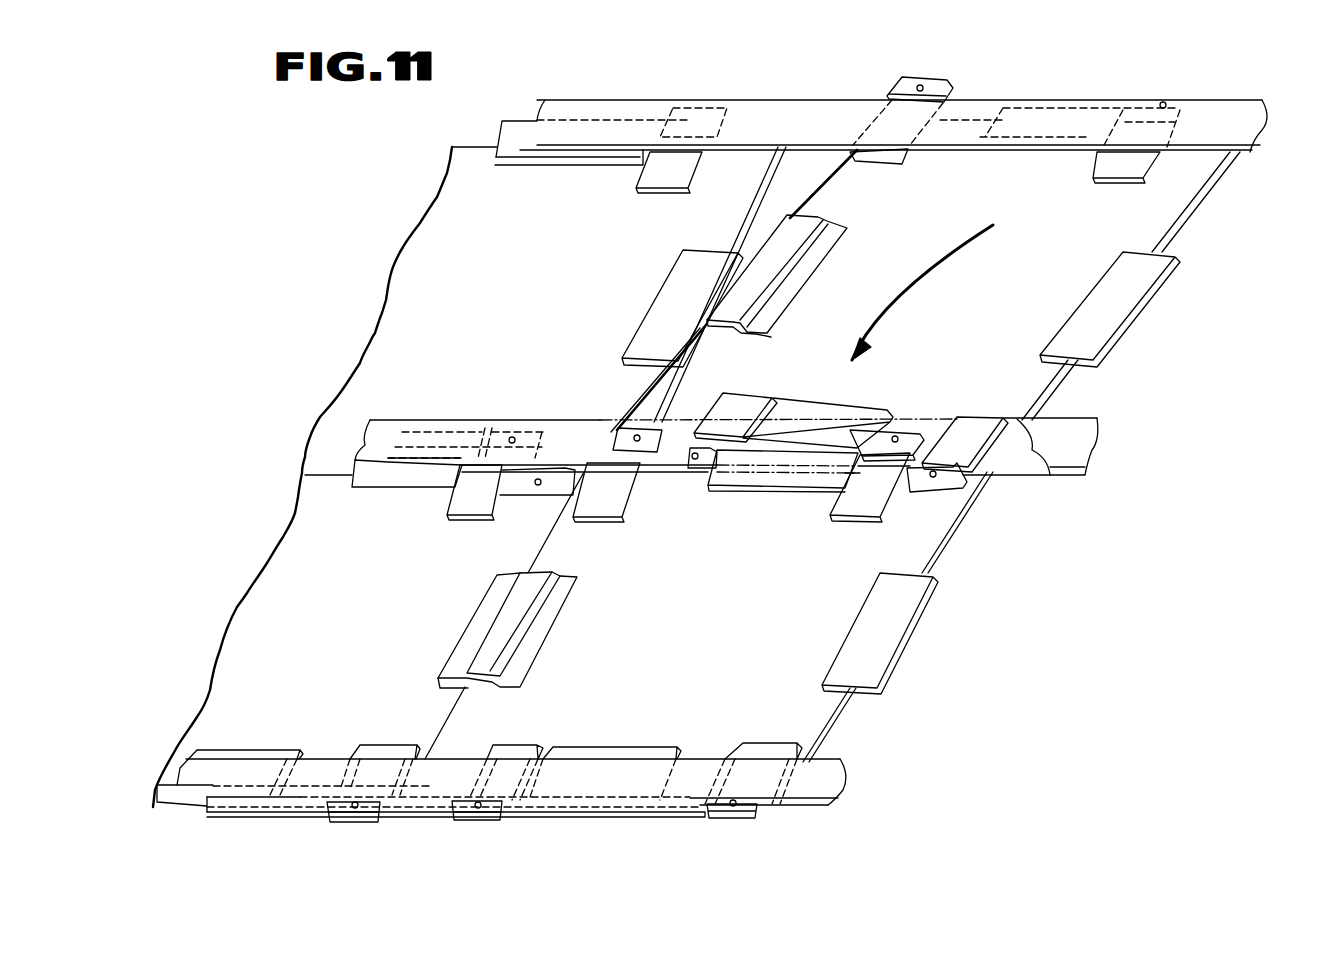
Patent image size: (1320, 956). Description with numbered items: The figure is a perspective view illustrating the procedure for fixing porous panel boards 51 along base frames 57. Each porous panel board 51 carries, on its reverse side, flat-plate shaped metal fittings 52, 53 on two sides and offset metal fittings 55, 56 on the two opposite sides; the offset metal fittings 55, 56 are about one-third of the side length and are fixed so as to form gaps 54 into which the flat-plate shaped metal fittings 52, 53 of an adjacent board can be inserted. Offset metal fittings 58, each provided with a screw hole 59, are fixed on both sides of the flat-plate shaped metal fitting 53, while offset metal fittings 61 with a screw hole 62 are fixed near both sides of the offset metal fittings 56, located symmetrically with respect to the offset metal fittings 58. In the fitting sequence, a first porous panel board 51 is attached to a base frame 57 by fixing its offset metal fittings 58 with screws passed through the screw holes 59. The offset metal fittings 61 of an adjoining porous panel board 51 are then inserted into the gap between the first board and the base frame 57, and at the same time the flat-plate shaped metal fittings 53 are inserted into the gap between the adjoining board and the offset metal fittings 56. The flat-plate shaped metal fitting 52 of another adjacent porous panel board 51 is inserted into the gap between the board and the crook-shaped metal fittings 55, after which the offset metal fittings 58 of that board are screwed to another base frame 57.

The porous panel board 51 is at (710, 433).
The flat-plate shaped metal fitting 52 is at (677, 290).
The flat-plate shaped metal fitting 53 is at (1093, 123).
The gap 54 is at (730, 330).
The offset metal fitting 55 is at (783, 233).
The offset metal fitting 56 is at (853, 427).
The base frame 57 is at (752, 120).
The offset metal fitting 58 is at (890, 122).
The screw hole 59 is at (924, 86).
The offset metal fitting 61 is at (747, 405).
The screw hole 62 is at (690, 470).